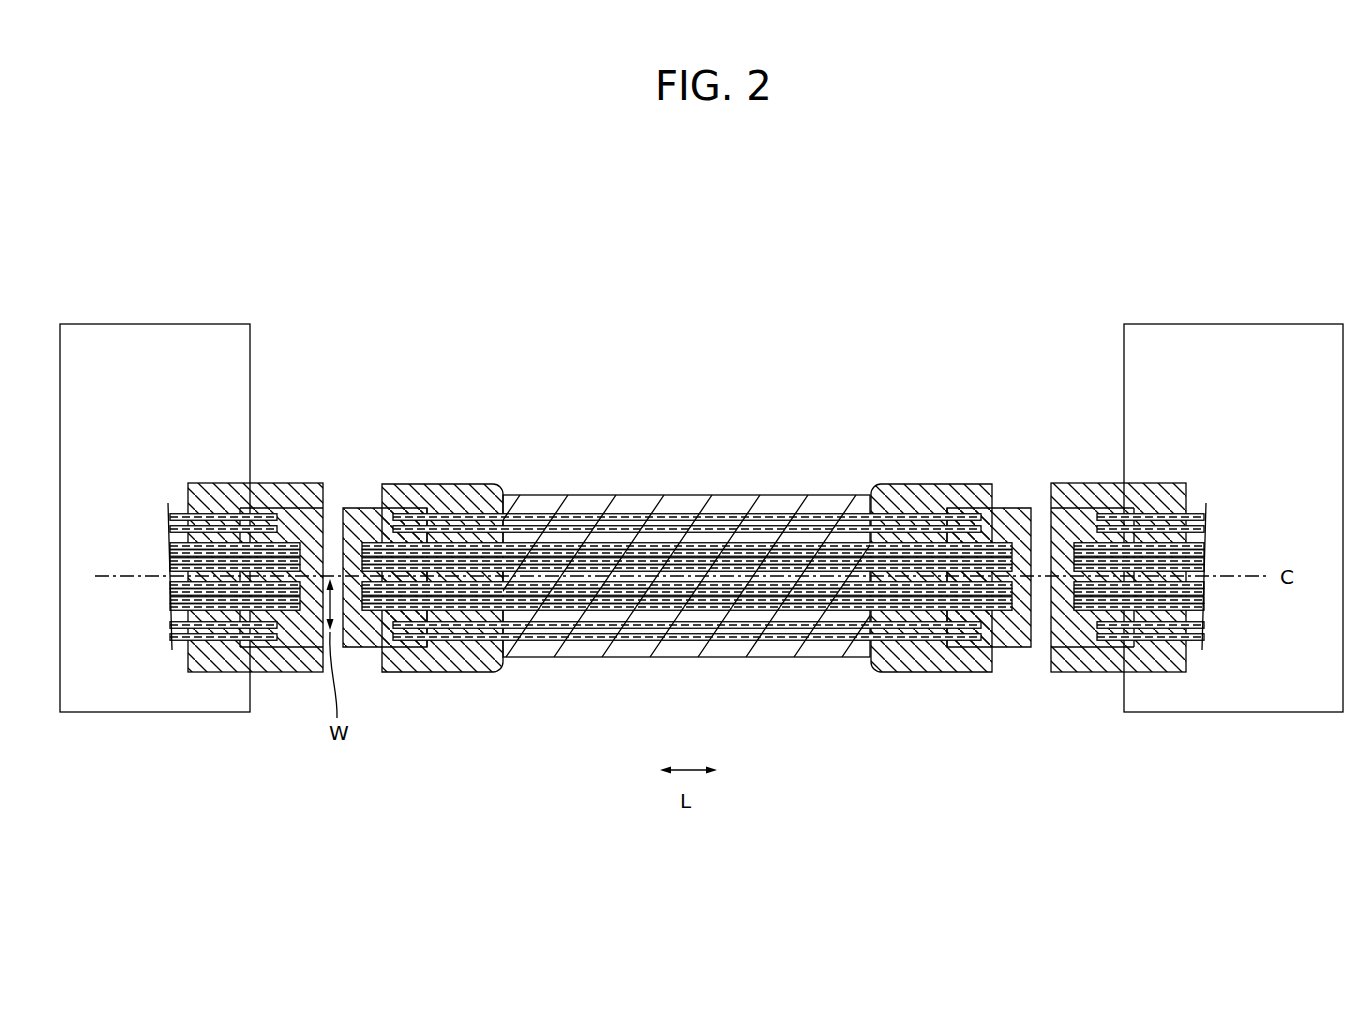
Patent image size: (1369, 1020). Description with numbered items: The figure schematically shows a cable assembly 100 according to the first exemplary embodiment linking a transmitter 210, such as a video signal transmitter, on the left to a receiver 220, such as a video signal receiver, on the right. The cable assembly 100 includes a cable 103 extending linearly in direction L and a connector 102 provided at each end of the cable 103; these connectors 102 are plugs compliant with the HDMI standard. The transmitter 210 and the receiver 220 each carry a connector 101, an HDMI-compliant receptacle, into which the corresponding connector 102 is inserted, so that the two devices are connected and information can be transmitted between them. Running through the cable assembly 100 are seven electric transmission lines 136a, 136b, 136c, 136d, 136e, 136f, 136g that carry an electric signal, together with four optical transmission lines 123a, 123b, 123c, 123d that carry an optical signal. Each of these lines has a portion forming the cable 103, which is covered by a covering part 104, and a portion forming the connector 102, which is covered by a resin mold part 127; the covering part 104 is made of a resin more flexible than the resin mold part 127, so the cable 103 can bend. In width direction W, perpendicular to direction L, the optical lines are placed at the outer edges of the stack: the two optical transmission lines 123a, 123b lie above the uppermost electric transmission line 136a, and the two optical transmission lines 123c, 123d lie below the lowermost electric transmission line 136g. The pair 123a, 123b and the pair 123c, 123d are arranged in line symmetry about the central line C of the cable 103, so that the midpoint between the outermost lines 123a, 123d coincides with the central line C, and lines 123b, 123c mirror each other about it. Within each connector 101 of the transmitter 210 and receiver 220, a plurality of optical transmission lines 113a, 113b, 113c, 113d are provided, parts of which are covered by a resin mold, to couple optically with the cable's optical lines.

The cable assembly 100 is at (652, 486).
The connector 101 is at (290, 483).
The connector 102 is at (405, 484).
The cable 103 is at (693, 495).
The covering part 104 is at (667, 648).
The optical transmission line 113a is at (214, 518).
The optical transmission line 113b is at (262, 528).
The optical transmission line 113c is at (190, 640).
The optical transmission line 113d is at (237, 640).
The optical transmission line 123a is at (518, 514).
The optical transmission line 123b is at (570, 526).
The optical transmission line 123c is at (507, 628).
The optical transmission line 123d is at (585, 640).
The resin mold part 127 is at (415, 662).
The electric transmission line 136a is at (720, 543).
The electric transmission line 136b is at (760, 550).
The electric transmission line 136c is at (805, 558).
The electric transmission line 136d is at (830, 565).
The electric transmission line 136e is at (720, 588).
The electric transmission line 136f is at (777, 596).
The electric transmission line 136g is at (832, 604).
The transmitter 210 is at (140, 324).
The receiver 220 is at (1278, 324).